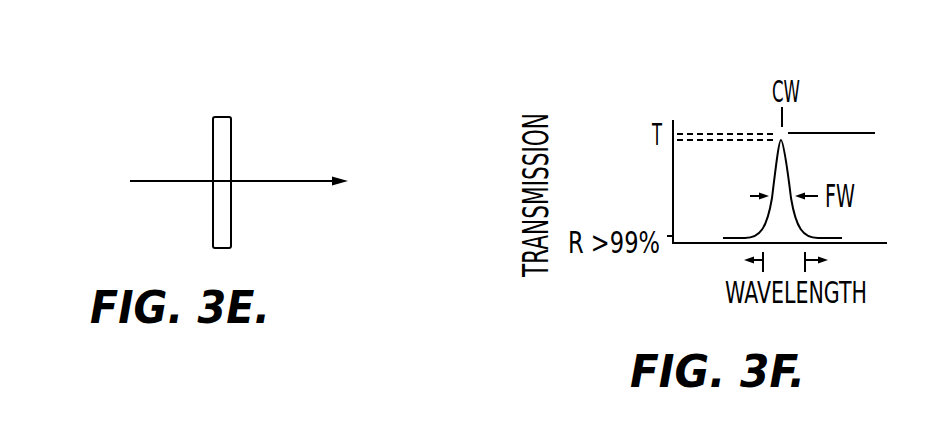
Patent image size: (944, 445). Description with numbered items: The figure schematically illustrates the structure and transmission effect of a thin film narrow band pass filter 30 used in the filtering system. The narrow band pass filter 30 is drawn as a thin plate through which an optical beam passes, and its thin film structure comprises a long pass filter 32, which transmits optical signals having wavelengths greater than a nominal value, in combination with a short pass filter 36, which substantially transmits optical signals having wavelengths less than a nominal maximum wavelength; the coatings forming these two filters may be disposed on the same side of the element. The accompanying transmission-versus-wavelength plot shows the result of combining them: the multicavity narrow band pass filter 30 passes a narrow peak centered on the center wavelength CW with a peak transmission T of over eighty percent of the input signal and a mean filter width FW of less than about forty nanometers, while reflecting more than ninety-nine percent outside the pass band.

The narrow band pass filter 30 is at (195, 116).
The long pass filter 32 is at (213, 221).
The short pass filter 36 is at (231, 221).